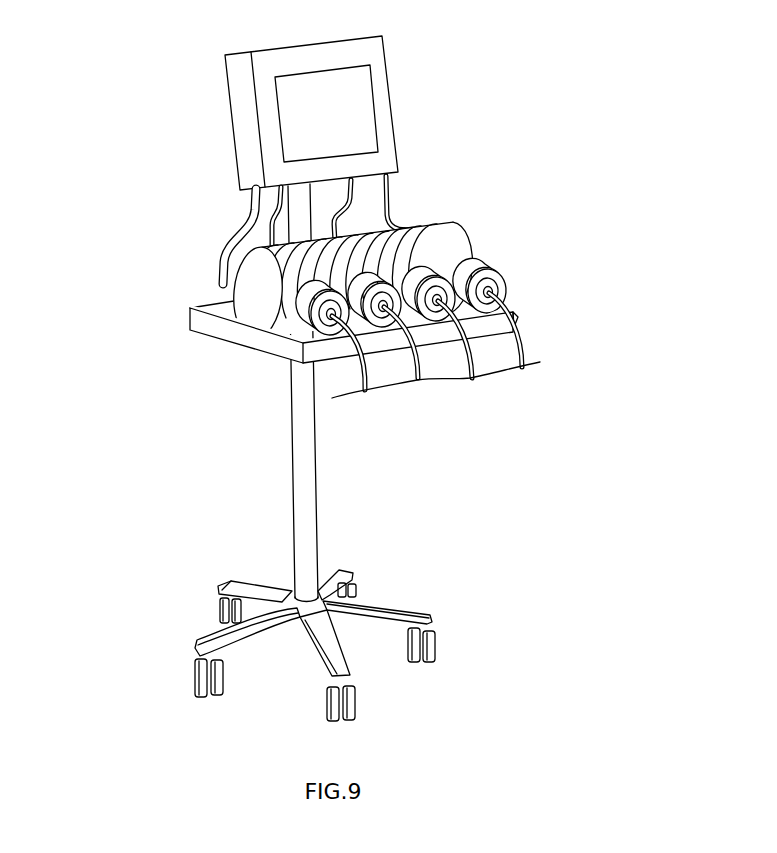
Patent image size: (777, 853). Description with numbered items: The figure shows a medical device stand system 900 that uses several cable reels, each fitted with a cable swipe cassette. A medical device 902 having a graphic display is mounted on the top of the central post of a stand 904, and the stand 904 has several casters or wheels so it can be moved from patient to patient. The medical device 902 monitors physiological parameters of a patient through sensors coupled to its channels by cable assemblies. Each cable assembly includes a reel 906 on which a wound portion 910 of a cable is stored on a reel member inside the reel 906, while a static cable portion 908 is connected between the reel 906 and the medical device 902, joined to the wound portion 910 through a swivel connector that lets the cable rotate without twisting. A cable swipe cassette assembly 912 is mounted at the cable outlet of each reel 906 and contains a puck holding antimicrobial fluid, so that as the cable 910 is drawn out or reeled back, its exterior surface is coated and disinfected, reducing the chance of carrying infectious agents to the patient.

The medical device stand system 900 is at (719, 55).
The medical device 902 is at (228, 92).
The stand 904 is at (279, 434).
The reel 906 is at (233, 294).
The static cable portion 908 is at (238, 233).
The wound portion of cable 910 is at (367, 367).
The cable swipe cassette assembly 912 is at (330, 315).